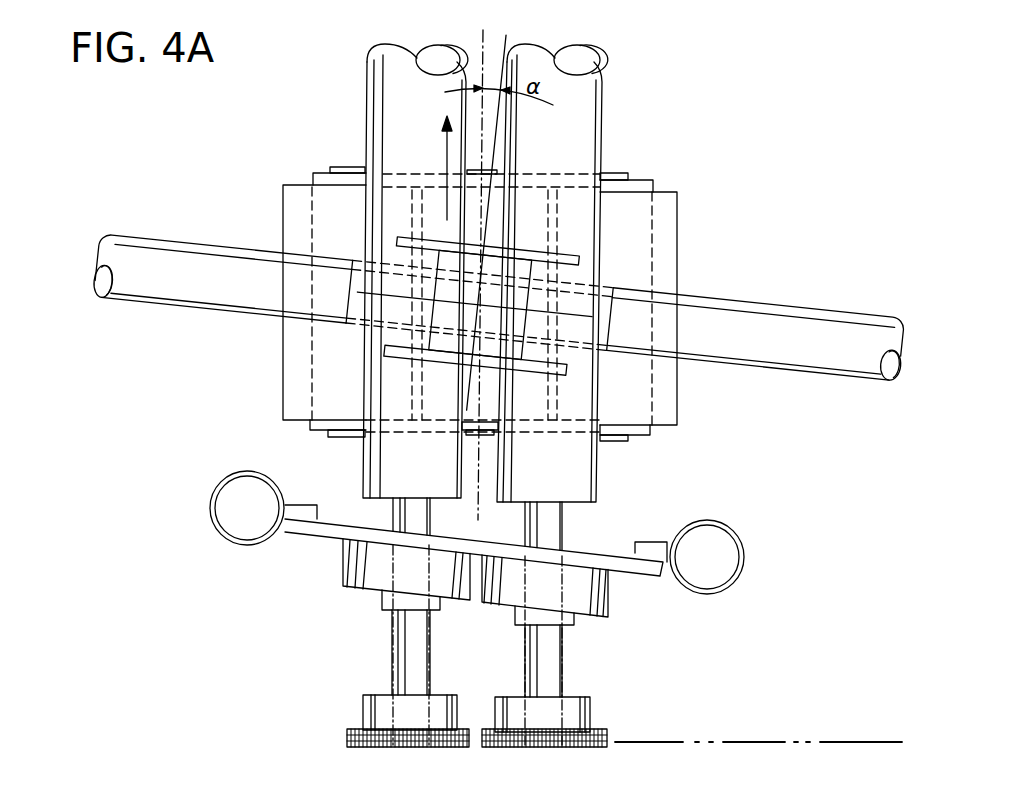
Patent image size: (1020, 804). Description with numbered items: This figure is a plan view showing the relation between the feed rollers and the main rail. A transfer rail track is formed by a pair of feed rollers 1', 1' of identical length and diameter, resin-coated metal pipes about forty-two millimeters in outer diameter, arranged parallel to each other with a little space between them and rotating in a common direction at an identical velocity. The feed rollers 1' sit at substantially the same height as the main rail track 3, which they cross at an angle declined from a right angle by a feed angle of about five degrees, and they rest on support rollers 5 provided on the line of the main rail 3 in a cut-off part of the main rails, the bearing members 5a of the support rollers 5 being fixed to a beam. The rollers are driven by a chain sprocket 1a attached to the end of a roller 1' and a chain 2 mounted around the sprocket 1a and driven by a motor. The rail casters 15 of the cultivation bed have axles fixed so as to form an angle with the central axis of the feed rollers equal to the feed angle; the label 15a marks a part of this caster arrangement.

The feed roller 1' is at (488, 273).
The chain sprocket 1a is at (347, 735).
The chain 2 is at (770, 742).
The main rail track 3 is at (168, 248).
The support roller 5 is at (665, 220).
The bearing member 5a is at (632, 437).
The rail caster 15 is at (522, 373).
The tilting mechanism bar 15a is at (490, 220).